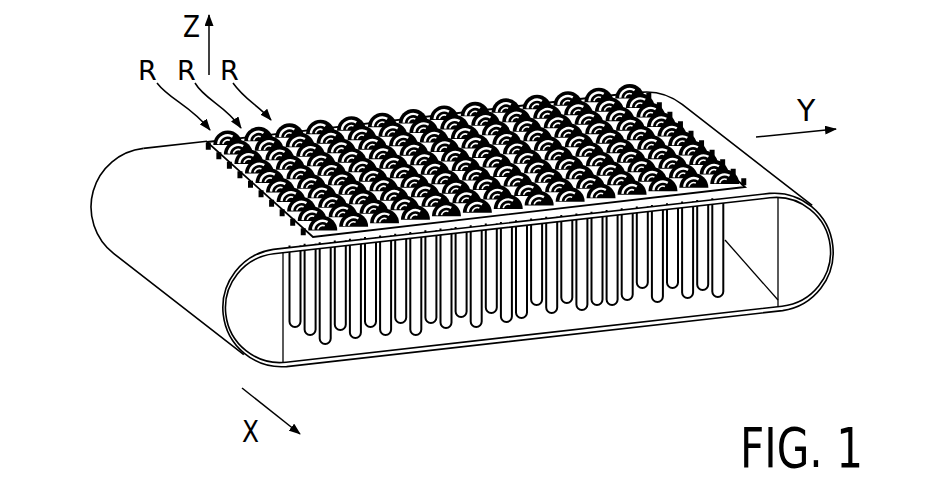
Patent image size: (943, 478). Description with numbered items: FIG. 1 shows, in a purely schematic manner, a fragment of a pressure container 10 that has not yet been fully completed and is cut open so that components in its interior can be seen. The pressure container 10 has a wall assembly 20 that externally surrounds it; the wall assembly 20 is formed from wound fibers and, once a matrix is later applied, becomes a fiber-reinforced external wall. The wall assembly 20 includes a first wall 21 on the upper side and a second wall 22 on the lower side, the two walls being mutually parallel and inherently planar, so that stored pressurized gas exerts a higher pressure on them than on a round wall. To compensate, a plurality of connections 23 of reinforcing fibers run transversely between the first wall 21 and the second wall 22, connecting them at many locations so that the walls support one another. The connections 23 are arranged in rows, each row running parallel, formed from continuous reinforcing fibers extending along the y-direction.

The pressure container 10 is at (438, 236).
The wall assembly 20 is at (140, 262).
The first wall 21 is at (698, 128).
The second wall 22 is at (737, 297).
The connections 23 is at (419, 336).